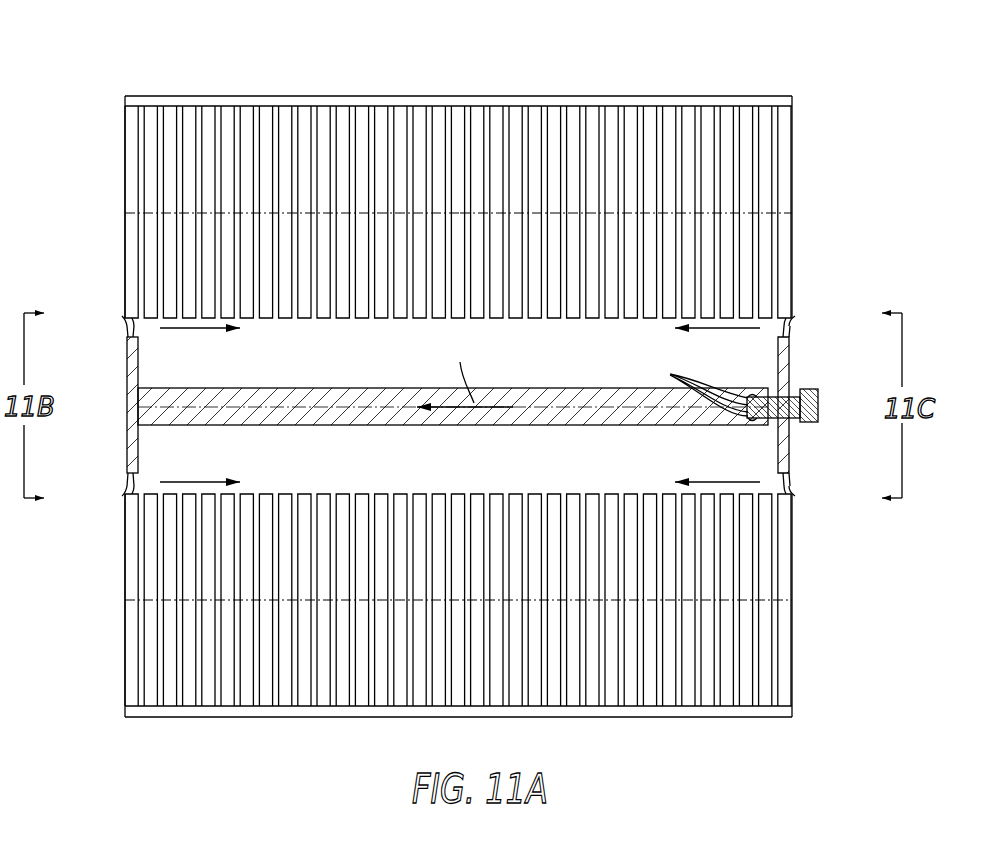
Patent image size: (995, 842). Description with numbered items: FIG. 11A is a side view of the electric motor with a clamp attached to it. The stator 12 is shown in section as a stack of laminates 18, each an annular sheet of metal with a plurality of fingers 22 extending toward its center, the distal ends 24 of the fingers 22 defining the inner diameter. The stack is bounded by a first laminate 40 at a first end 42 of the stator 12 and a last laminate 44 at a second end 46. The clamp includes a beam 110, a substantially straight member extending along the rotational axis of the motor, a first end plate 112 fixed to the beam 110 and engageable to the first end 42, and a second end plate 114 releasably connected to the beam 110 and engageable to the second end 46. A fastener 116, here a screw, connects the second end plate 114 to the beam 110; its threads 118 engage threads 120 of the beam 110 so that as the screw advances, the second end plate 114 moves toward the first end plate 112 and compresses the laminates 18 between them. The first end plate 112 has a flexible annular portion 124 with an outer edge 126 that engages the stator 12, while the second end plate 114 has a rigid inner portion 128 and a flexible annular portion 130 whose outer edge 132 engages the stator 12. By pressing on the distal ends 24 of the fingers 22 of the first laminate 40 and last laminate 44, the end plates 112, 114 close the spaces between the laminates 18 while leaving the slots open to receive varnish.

The stator 12 is at (266, 98).
The laminates 18 is at (133, 120).
The fingers 22 is at (133, 263).
The distal ends 24 is at (135, 322).
The first laminate 40 is at (133, 172).
The first end 42 is at (133, 223).
The last laminate 44 is at (793, 172).
The second end 46 is at (793, 226).
The beam 110 is at (563, 403).
The first end plate 112 is at (127, 458).
The second end plate 114 is at (790, 354).
The fastener 116 is at (812, 392).
The threads 118 is at (670, 374).
The threads 120 is at (751, 396).
The flexible annular portion 124 is at (127, 340).
The outer edge 126 is at (128, 318).
The rigid inner portion 128 is at (790, 458).
The flexible annular portion 130 is at (790, 338).
The outer edge 132 is at (794, 318).